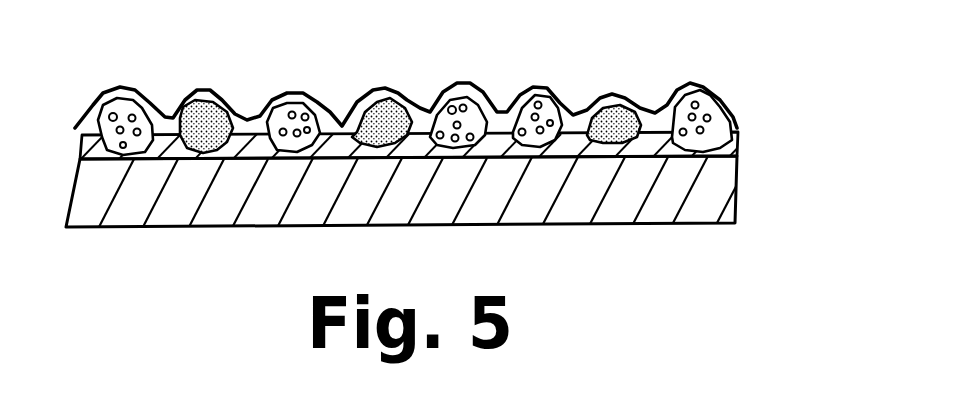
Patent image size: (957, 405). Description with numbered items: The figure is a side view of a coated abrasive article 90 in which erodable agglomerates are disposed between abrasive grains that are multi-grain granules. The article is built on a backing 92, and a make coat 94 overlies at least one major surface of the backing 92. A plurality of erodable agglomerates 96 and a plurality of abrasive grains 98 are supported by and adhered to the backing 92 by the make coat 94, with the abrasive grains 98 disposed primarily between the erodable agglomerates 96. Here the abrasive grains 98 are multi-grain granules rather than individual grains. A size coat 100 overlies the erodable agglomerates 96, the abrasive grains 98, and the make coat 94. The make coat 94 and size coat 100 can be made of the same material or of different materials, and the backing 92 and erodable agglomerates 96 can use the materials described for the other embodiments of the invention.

The coated abrasive article 90 is at (469, 150).
The backing 92 is at (693, 205).
The make coat 94 is at (717, 138).
The erodable agglomerates 96 is at (358, 104).
The abrasive grains 98 is at (532, 96).
The size coat 100 is at (712, 88).